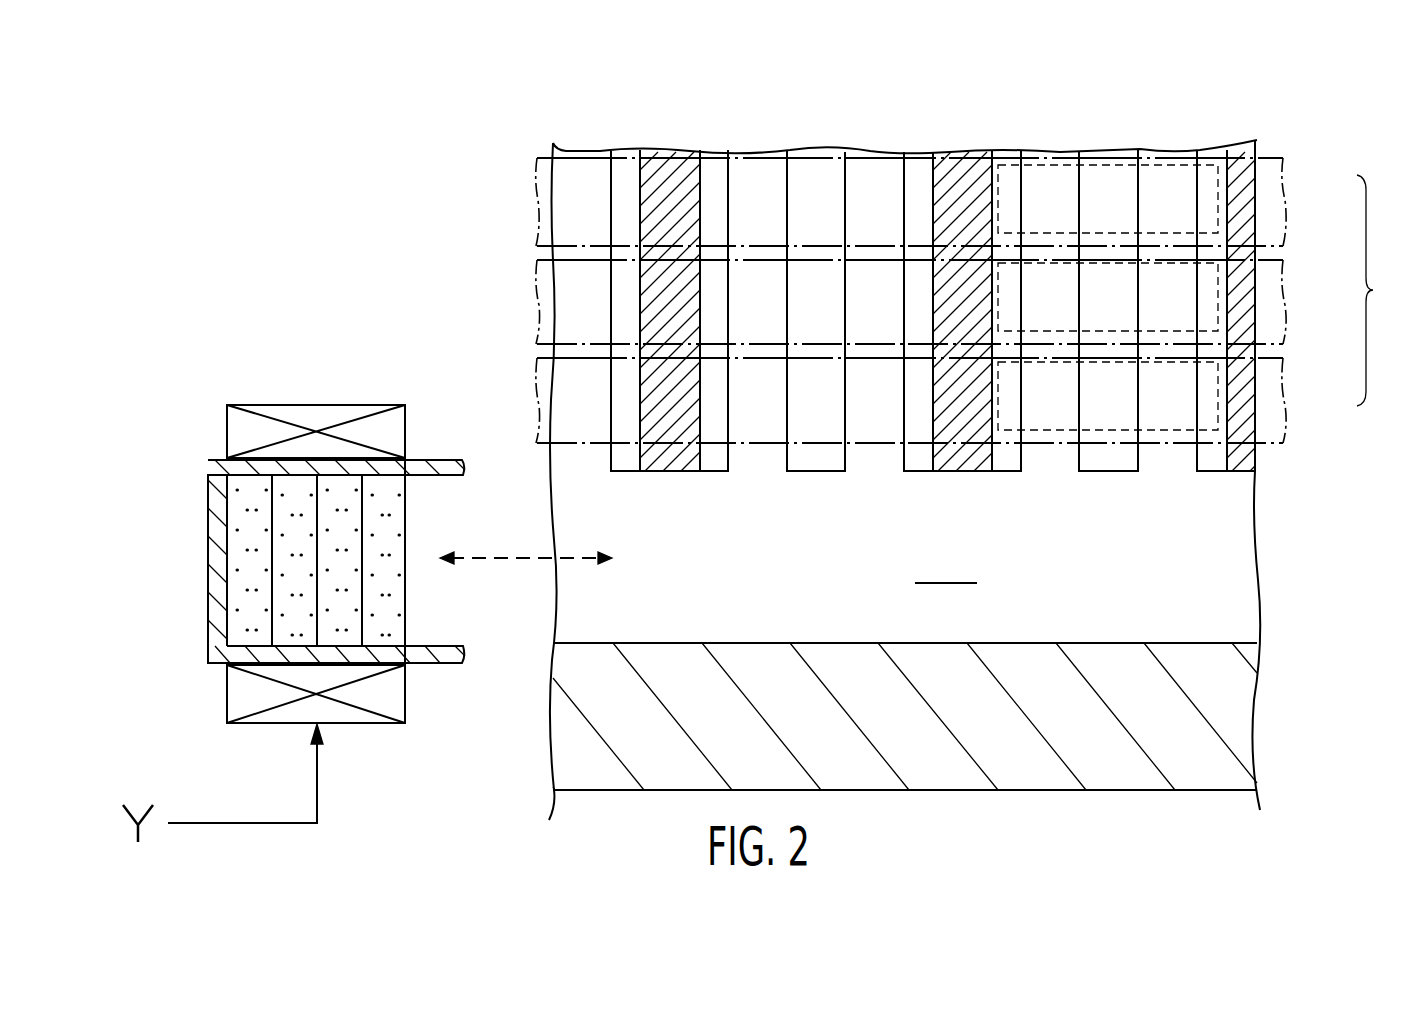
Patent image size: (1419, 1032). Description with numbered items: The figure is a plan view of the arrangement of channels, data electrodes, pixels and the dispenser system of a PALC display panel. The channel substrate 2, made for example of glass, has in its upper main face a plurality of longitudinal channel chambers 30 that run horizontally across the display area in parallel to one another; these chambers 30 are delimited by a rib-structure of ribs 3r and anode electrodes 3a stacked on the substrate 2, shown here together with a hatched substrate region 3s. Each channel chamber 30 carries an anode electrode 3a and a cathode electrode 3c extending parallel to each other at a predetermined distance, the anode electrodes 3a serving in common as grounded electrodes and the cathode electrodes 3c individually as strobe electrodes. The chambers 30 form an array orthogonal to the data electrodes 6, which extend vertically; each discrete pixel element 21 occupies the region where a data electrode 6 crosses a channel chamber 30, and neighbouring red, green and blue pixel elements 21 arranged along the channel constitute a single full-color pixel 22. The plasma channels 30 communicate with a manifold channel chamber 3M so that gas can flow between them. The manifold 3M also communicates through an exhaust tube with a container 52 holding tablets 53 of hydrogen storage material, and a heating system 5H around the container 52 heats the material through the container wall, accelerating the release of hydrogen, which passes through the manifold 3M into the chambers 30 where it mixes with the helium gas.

The channel substrate 2 is at (1240, 594).
The substrate 3s is at (1240, 706).
The manifold channel chamber 3M is at (946, 567).
The ribs 3r is at (640, 192).
The anode electrodes 3a is at (717, 195).
The cathode electrodes 3c is at (818, 175).
The data electrodes 6 is at (537, 225).
The pixel elements 21 is at (1212, 208).
The full-color pixel 22 is at (1387, 290).
The channel chambers 30 is at (818, 497).
The heating system 5H is at (357, 405).
The container 52 is at (208, 473).
The tablets 53 is at (237, 568).